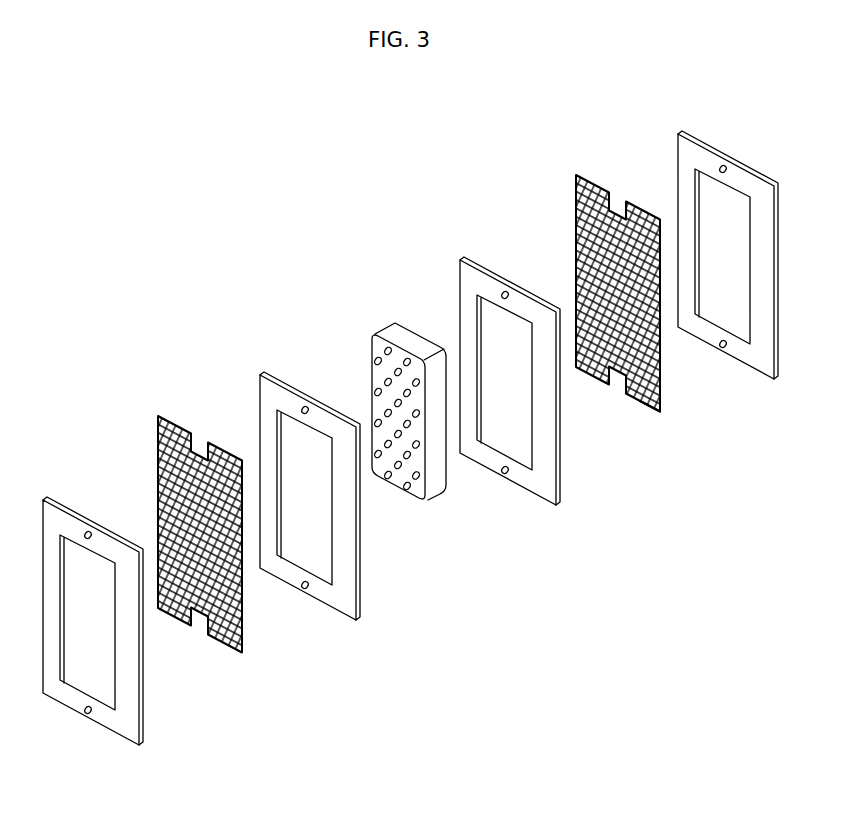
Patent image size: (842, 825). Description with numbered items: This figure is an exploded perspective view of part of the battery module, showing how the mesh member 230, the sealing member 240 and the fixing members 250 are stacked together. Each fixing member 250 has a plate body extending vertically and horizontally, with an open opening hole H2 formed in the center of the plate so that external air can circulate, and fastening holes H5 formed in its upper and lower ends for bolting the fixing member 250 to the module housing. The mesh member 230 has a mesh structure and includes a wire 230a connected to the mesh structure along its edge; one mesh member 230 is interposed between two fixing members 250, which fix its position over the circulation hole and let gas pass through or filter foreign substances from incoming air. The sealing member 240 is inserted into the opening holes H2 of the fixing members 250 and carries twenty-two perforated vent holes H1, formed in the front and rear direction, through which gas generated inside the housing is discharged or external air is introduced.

The mesh member 230 is at (433, 384).
The wire 230a is at (662, 406).
The sealing member 240 is at (384, 385).
The fixing member 250 is at (399, 412).
The vent hole H1 is at (403, 362).
The opening hole H2 is at (694, 256).
The fastening hole H5 is at (685, 273).